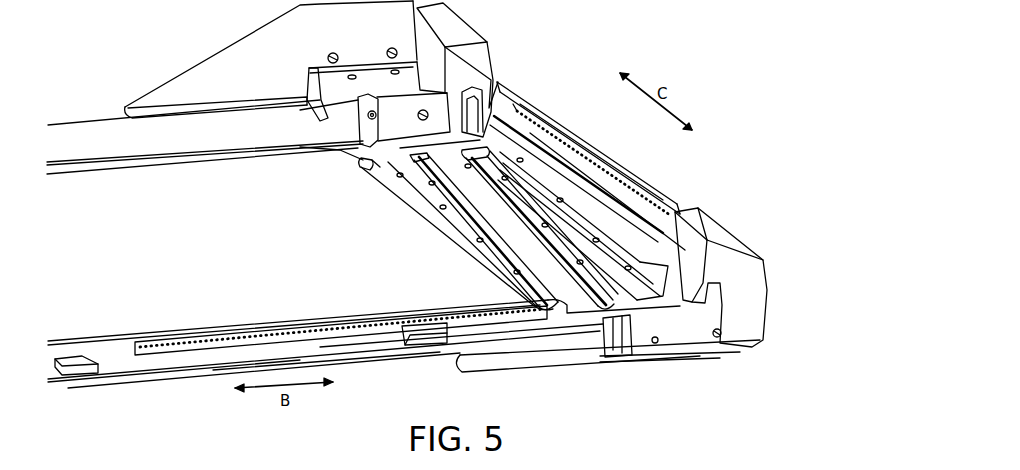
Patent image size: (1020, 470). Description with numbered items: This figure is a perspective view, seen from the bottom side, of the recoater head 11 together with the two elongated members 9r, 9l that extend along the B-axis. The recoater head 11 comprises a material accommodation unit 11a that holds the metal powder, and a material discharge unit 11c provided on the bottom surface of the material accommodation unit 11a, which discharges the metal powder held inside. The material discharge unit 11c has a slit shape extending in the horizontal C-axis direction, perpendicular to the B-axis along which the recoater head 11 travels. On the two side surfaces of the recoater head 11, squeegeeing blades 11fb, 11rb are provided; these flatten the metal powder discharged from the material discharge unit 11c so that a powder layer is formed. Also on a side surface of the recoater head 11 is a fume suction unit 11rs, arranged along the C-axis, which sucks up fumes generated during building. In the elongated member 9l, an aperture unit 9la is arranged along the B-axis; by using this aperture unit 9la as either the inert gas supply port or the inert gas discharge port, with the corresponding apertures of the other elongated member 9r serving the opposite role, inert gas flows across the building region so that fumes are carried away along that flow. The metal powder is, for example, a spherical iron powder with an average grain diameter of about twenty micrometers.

The elongated member 9r is at (95, 143).
The elongated member 9l is at (103, 345).
The aperture unit 9la is at (268, 332).
The recoater head 11 is at (618, 143).
The squeegeeing blade 11fb is at (378, 171).
The material accommodation unit 11a is at (418, 182).
The material discharge unit 11c is at (462, 213).
The fume suction unit 11rs is at (645, 191).
The squeegeeing blade 11rb is at (652, 300).